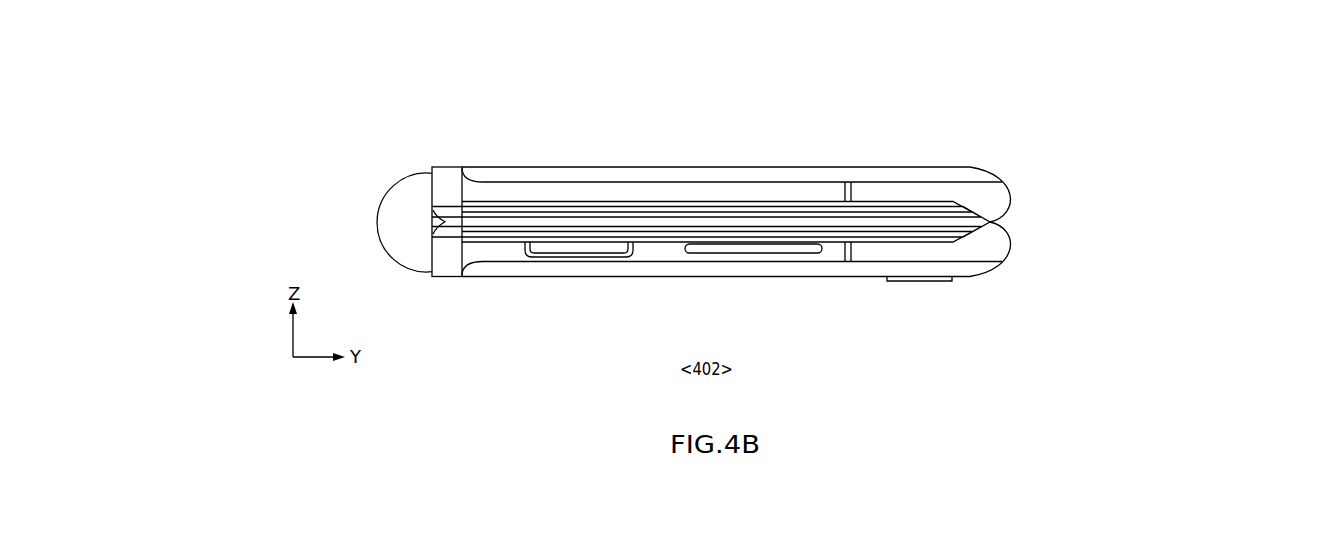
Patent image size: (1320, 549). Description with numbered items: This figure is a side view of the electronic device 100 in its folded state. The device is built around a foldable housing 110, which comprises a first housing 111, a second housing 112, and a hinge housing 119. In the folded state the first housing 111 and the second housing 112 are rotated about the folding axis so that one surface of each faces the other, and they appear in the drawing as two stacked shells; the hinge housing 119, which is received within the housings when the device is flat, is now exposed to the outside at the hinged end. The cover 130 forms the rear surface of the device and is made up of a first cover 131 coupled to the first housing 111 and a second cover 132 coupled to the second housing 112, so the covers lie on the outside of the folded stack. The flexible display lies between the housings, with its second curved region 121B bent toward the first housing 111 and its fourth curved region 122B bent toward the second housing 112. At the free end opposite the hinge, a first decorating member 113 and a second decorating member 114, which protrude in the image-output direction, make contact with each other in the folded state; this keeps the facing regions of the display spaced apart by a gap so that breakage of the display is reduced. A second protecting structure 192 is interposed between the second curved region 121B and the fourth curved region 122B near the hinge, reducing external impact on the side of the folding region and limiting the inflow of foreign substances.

The electronic device 100 is at (434, 135).
The foldable housing 110 is at (1222, 43).
The first housing 111 is at (968, 258).
The second housing 112 is at (913, 190).
The first decorating member 113 is at (995, 223).
The second decorating member 114 is at (990, 218).
The hinge housing 119 is at (407, 200).
The second curved region 121B is at (649, 230).
The fourth curved region 122B is at (697, 212).
The cover 130 is at (1222, 162).
The first cover 131 is at (823, 272).
The second cover 132 is at (617, 173).
The second protecting structure 192 is at (432, 222).